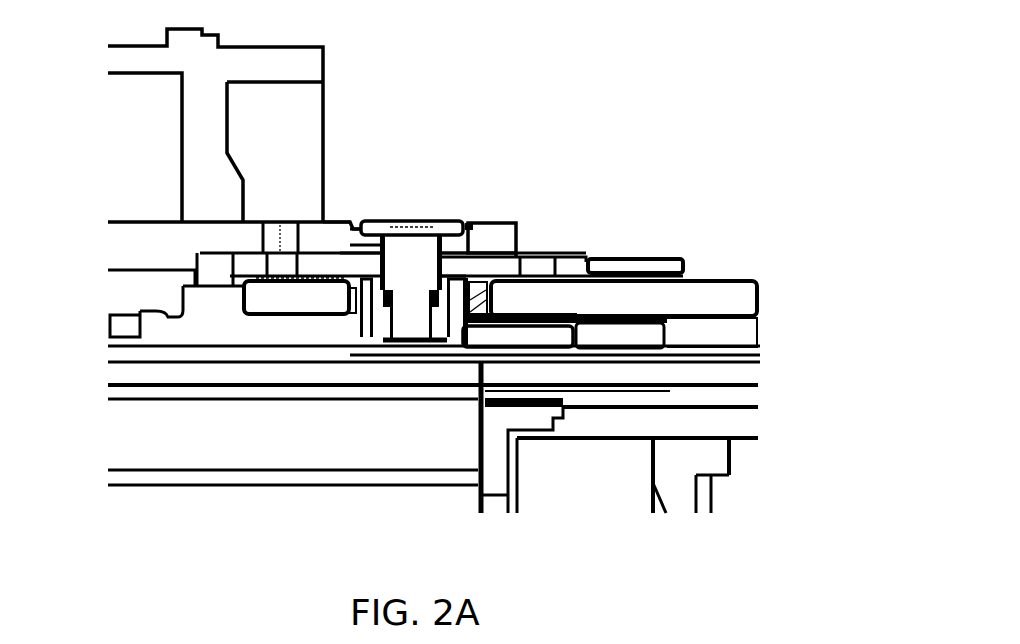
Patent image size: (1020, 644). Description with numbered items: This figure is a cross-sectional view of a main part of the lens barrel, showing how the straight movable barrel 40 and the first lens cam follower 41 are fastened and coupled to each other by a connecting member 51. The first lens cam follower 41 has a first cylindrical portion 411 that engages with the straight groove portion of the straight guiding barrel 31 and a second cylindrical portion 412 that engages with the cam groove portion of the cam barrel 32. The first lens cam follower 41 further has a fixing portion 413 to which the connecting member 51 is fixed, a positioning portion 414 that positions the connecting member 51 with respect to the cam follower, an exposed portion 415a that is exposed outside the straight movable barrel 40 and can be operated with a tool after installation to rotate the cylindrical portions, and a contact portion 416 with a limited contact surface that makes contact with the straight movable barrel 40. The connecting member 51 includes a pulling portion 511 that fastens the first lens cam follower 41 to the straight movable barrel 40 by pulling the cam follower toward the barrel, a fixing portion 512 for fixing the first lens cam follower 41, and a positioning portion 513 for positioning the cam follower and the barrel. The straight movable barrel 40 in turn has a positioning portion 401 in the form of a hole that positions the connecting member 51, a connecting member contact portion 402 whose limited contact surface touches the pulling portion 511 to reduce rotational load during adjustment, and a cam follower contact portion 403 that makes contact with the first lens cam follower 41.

The straight movable barrel 40 is at (132, 248).
The cam follower contact portion 403 is at (372, 242).
The contact portion 416 is at (372, 242).
The connecting member contact portion 402 is at (373, 226).
The pulling portion 511 is at (373, 226).
The connecting member 51 is at (412, 216).
The positioning portion 401 is at (422, 272).
The positioning portion 414 is at (452, 245).
The positioning portion 513 is at (452, 245).
The first lens cam follower 41 is at (586, 254).
The exposed portion 415a is at (686, 266).
The cam barrel 32 is at (713, 300).
The straight guiding barrel 31 is at (722, 329).
The second cylindrical portion 412 is at (332, 316).
The first cylindrical portion 411 is at (375, 347).
The fixing portion 413 is at (400, 343).
The fixing portion 512 is at (400, 343).